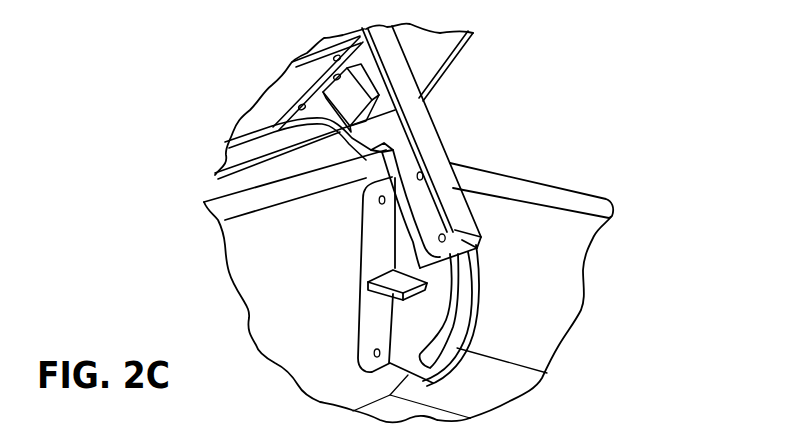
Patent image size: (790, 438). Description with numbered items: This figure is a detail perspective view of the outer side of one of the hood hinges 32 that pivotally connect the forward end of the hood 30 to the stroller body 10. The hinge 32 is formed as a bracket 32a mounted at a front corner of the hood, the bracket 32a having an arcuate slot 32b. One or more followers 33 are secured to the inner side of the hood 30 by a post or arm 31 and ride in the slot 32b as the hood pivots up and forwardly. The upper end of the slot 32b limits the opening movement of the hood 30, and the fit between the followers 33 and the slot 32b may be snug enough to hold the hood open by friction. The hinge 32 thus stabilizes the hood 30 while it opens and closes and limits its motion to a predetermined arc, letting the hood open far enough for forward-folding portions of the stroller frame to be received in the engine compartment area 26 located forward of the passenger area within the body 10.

The stroller body 10 is at (580, 200).
The engine compartment area 26 is at (548, 254).
The hood 30 is at (430, 62).
The post or arm 31 is at (420, 130).
The followers 33 is at (442, 238).
The hood hinge 32 is at (410, 282).
The bracket 32a is at (478, 303).
The arcuate slot 32b is at (452, 331).